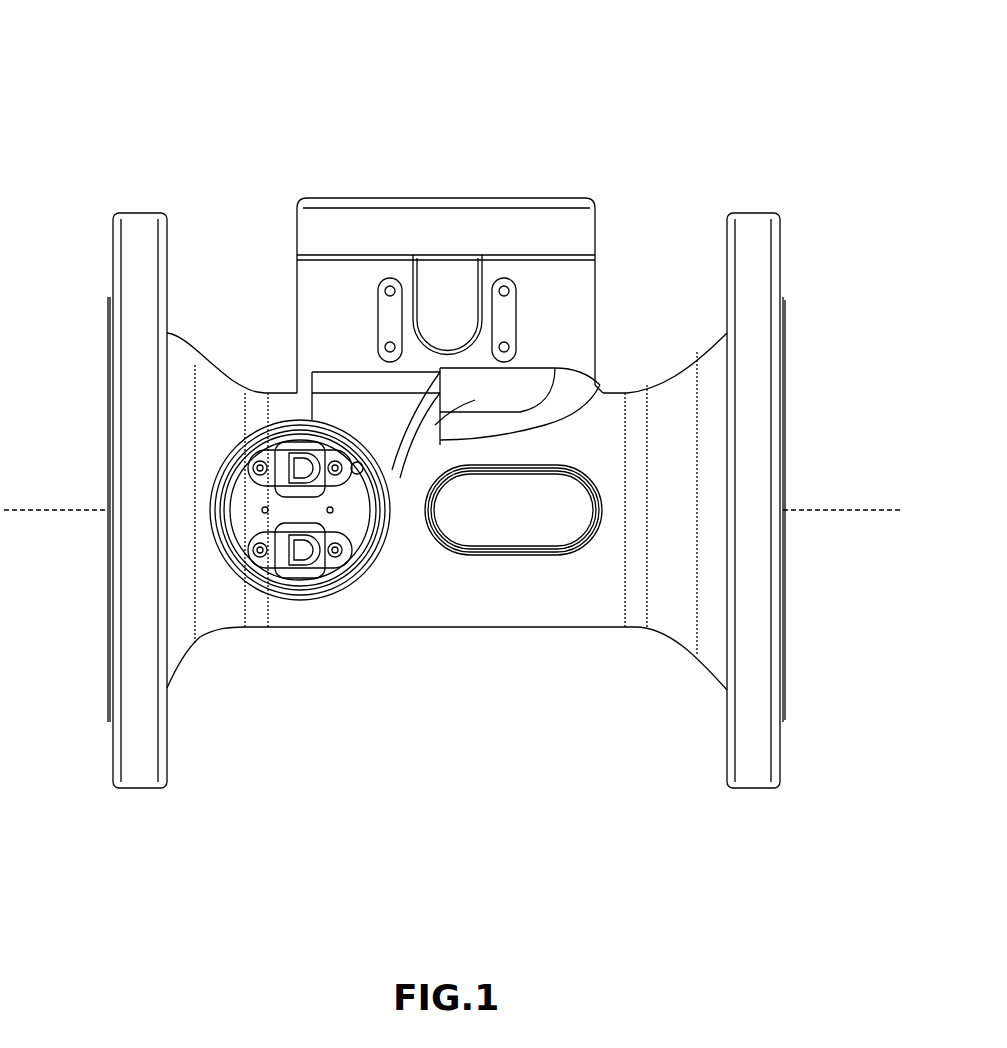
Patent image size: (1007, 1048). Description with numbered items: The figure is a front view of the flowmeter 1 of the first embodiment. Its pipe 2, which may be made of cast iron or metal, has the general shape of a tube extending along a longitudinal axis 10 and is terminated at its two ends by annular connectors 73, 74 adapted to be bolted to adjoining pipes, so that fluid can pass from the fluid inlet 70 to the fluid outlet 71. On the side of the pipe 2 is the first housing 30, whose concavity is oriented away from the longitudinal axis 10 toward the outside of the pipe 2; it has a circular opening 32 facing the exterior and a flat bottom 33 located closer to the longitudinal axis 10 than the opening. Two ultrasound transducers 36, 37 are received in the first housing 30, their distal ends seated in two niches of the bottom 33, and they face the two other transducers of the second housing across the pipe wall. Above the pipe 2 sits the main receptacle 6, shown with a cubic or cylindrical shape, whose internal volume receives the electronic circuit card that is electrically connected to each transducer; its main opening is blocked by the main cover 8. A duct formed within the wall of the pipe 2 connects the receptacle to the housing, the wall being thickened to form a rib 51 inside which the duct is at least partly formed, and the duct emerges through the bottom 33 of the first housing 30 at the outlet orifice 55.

The flowmeter 1 is at (163, 95).
The pipe 2 is at (430, 685).
The main receptacle 6 is at (297, 300).
The main cover 8 is at (345, 197).
The longitudinal axis 10 is at (841, 510).
The first housing 30 is at (264, 497).
The circular opening 32 is at (283, 592).
The flat bottom 33 is at (360, 513).
The ultrasound transducer 36 is at (268, 540).
The ultrasound transducer 37 is at (265, 465).
The rib 51 is at (418, 428).
The outlet orifice 55 is at (357, 457).
The fluid inlet 70 is at (88, 582).
The fluid outlet 71 is at (800, 560).
The annular connector 73 is at (133, 257).
The annular connector 74 is at (760, 257).